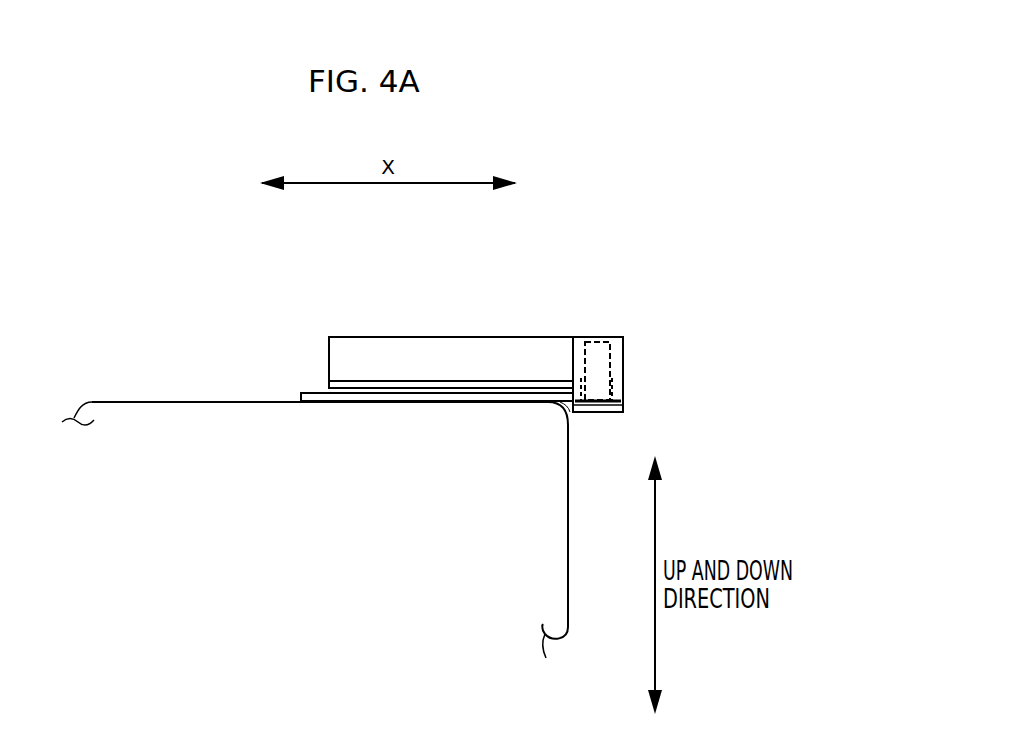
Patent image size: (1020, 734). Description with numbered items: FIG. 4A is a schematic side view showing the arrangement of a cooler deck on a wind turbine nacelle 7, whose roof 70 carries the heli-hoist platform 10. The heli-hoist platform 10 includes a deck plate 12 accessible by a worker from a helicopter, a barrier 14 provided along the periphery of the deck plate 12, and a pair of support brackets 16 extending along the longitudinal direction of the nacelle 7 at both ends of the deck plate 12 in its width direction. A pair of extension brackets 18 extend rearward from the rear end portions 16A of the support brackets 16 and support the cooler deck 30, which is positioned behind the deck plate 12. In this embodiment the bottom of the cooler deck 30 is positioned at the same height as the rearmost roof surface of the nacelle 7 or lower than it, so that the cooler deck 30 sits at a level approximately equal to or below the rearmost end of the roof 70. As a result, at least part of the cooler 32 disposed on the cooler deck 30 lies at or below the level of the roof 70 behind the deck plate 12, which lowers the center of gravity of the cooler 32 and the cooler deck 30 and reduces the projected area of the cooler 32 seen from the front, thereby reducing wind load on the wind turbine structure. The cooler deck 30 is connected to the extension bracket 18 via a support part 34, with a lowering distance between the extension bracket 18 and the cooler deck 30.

The nacelle 7 is at (212, 318).
The heli-hoist platform 10 is at (505, 305).
The deck plate 12 is at (412, 388).
The barrier 14 is at (355, 337).
The support bracket 16 is at (311, 389).
The rear end portion 16A is at (563, 408).
The extension bracket 18 is at (615, 401).
The cooler deck 30 is at (612, 411).
The cooler 32 is at (612, 348).
The support part 34 is at (613, 384).
The roof 70 is at (167, 402).